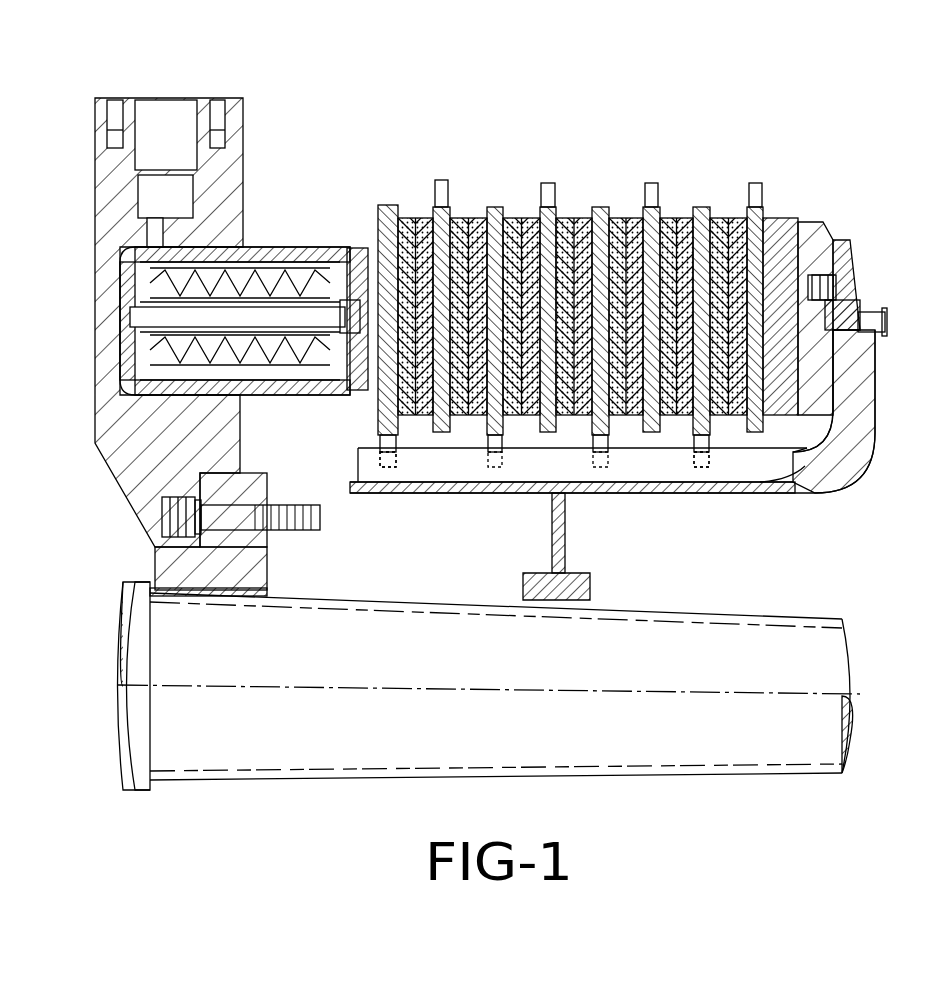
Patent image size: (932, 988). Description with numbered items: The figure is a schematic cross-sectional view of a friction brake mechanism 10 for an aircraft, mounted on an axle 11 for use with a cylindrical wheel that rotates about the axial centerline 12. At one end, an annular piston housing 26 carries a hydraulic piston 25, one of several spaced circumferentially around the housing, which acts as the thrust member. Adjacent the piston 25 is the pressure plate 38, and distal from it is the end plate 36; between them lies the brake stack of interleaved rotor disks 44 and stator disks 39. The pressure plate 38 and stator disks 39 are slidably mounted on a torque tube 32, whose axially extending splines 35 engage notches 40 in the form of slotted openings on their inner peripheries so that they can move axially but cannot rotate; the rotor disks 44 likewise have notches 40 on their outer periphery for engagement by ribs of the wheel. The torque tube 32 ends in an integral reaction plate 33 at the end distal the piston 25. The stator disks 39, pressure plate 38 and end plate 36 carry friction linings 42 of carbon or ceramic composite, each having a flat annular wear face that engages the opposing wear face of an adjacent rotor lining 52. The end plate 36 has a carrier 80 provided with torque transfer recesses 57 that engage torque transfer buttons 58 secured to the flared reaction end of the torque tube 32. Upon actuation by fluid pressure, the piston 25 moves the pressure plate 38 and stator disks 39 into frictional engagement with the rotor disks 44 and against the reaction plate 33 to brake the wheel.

The friction brake mechanism 10 is at (682, 104).
The axle 11 is at (757, 618).
The axial centerline 12 is at (570, 690).
The hydraulic piston 25 is at (286, 266).
The piston housing 26 is at (233, 98).
The torque tube 32 is at (792, 490).
The reaction plate 33 is at (855, 460).
The splines 35 is at (628, 462).
The end plate 36 is at (818, 222).
The pressure plate 38 is at (380, 205).
The stator disks 39 is at (496, 207).
The notches 40 is at (549, 183).
The friction lining 42 is at (785, 222).
The rotor disks 44 is at (441, 180).
The rotor lining 52 is at (421, 218).
The torque transfer recesses 57 is at (840, 318).
The torque transfer buttons 58 is at (835, 285).
The carrier 80 is at (805, 222).